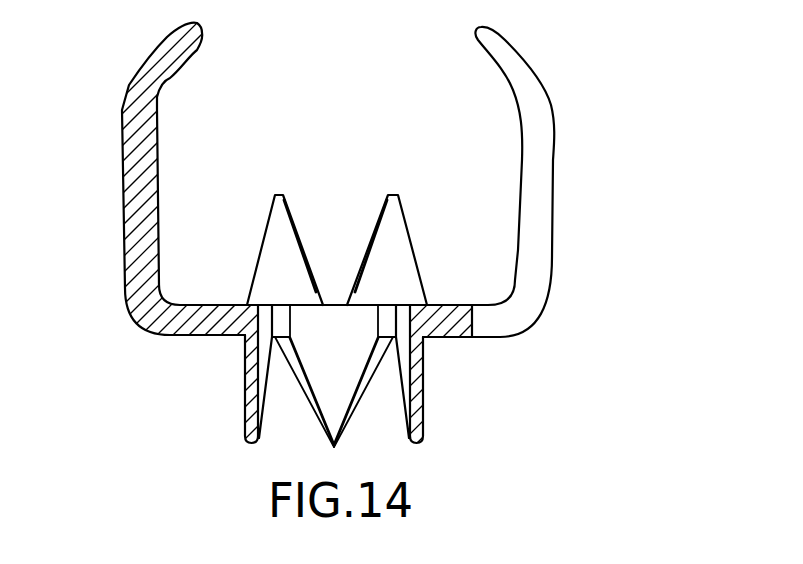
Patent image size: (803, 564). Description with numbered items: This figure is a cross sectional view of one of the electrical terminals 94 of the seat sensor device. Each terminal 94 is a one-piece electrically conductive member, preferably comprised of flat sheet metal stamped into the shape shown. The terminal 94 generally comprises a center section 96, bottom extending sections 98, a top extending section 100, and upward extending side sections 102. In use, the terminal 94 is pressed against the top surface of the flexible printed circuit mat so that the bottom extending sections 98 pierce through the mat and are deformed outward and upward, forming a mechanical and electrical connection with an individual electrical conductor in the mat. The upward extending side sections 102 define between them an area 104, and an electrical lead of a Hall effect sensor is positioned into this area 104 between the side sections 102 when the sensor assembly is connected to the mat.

The terminal 94 is at (605, 40).
The center section 96 is at (440, 328).
The bottom extending sections 98 is at (247, 383).
The top extending section 100 is at (290, 213).
The upward extending side sections 102 is at (128, 152).
The area 104 is at (362, 190).